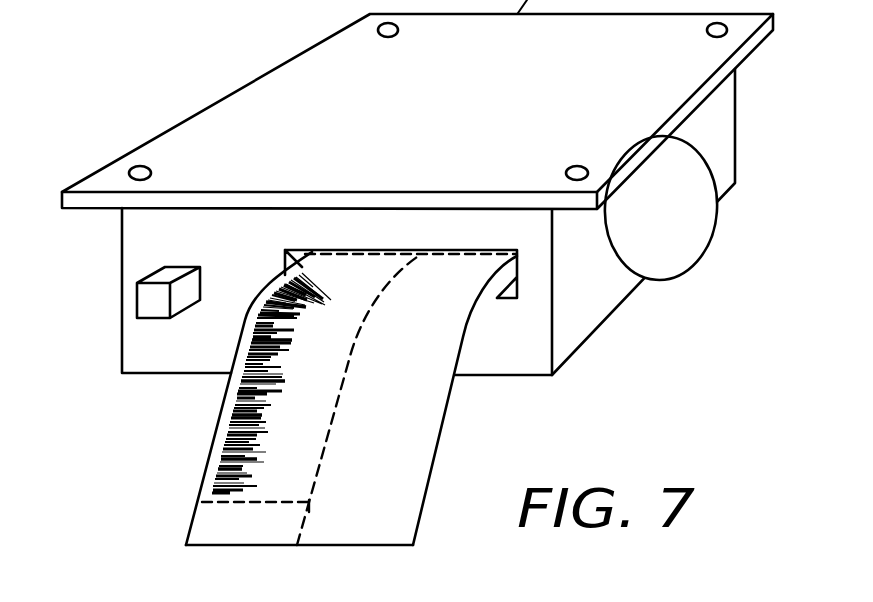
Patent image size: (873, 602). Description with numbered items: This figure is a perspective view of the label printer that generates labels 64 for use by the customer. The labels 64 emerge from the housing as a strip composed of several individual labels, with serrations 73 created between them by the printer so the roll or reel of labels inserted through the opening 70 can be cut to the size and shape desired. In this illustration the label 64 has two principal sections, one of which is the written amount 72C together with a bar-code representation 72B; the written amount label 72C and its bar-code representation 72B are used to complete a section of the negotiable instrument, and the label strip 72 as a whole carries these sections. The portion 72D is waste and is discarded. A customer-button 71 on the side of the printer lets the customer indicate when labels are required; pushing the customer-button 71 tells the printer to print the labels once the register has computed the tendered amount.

The labels 64 is at (432, 472).
The opening 70 is at (712, 248).
The customer-button 71 is at (137, 296).
The printed receipt 72 is at (281, 386).
The bar-code representation 72B is at (240, 428).
The written amount 72C is at (265, 490).
The portion 72D is at (212, 530).
The serrations 73 is at (392, 254).